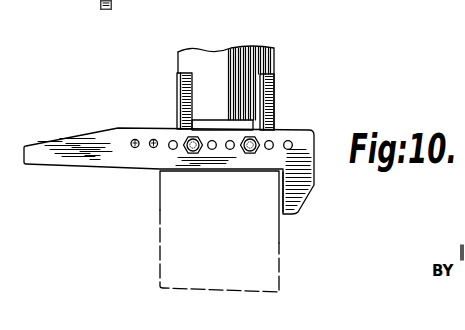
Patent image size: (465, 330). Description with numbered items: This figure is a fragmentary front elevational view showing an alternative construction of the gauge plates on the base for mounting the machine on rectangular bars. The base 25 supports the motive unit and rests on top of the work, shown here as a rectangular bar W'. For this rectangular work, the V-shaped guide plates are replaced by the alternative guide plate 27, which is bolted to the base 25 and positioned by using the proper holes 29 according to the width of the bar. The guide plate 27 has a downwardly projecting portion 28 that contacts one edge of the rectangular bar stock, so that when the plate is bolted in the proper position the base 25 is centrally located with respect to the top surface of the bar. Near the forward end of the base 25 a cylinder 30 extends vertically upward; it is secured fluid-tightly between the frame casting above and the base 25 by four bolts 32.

The base 25 is at (210, 124).
The guide plate 27 is at (305, 140).
The downwardly projecting portion 28 is at (298, 213).
The holes 29 is at (132, 148).
The cylinder 30 is at (222, 58).
The bolts 32 is at (180, 89).
The work piece W' is at (250, 231).